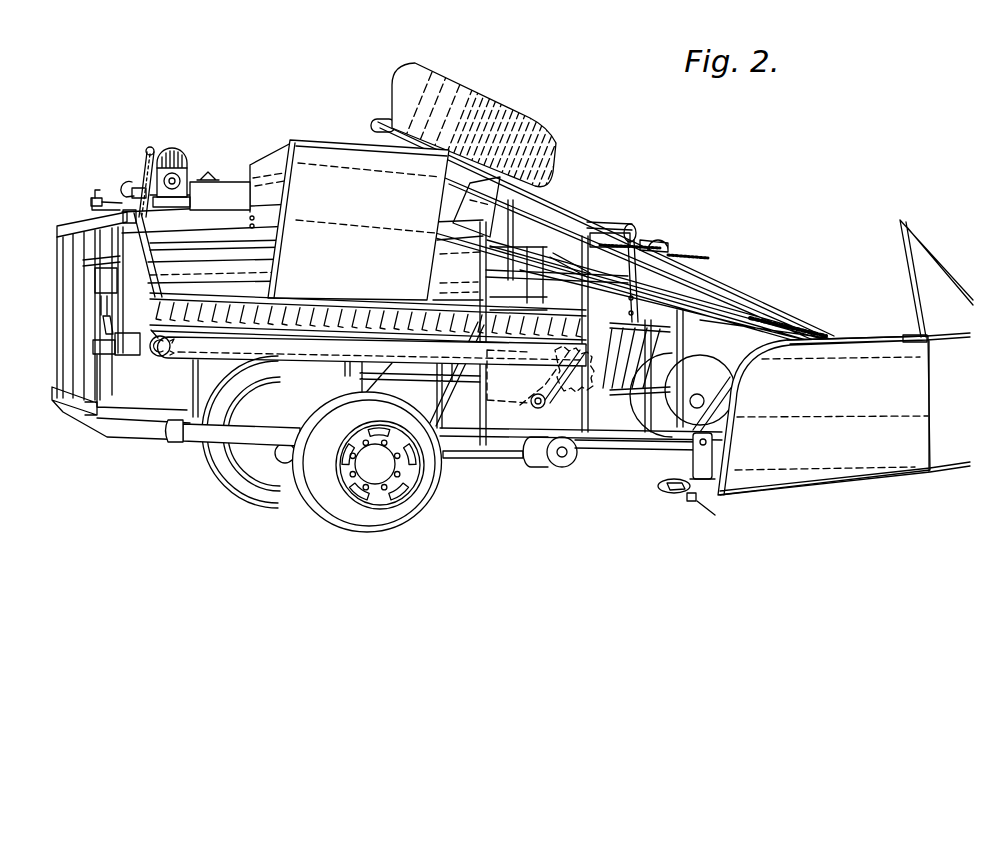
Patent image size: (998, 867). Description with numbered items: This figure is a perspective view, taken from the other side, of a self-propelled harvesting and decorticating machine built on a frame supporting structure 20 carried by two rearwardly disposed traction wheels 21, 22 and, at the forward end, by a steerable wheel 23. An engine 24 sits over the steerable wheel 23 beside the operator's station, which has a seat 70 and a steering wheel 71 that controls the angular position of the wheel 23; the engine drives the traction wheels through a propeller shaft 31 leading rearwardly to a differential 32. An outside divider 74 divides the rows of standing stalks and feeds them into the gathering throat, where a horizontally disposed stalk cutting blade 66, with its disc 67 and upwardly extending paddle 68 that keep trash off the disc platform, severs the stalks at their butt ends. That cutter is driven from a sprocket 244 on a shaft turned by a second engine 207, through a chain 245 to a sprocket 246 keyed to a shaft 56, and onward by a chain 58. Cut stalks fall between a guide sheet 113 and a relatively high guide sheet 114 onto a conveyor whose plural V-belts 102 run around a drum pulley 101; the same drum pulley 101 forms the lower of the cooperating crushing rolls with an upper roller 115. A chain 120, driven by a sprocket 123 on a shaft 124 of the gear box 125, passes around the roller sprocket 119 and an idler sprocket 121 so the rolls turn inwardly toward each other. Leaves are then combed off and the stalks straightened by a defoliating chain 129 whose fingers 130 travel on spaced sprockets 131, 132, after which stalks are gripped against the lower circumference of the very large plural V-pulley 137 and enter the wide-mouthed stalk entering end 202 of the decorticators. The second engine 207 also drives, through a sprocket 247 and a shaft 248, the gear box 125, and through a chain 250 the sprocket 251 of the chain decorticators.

The frame supporting structure 20 is at (191, 443).
The traction wheel 21 is at (235, 480).
The traction wheel 22 is at (380, 530).
The steerable wheel 23 is at (735, 390).
The engine 24 is at (668, 236).
The propeller shaft 31 is at (465, 459).
The differential 32 is at (284, 458).
The shaft 56 is at (546, 408).
The chain 58 is at (546, 417).
The stalk cutting blade 66 is at (700, 501).
The disc 67 is at (688, 495).
The paddle 68 is at (667, 484).
The seat 70 is at (563, 292).
The steering wheel 71 is at (617, 222).
The outside divider 74 is at (908, 474).
The drum pulley 101 is at (337, 300).
The V-belts 102 is at (265, 295).
The guide sheet 113 is at (527, 124).
The guide sheet 114 is at (327, 150).
The roller 115 is at (280, 258).
The sprocket 119 is at (148, 263).
The chain 120 is at (91, 199).
The idler sprocket 121 is at (138, 357).
The sprocket 123 is at (151, 150).
The shaft 124 is at (147, 163).
The gear box 125 is at (184, 147).
The defoliating chain 129 is at (165, 365).
The fingers 130 is at (199, 368).
The sprocket 131 is at (520, 372).
The sprocket 132 is at (154, 358).
The plural V-pulley 137 is at (553, 207).
The stalk entering end 202 is at (399, 295).
The second engine 207 is at (239, 175).
The sprocket 244 is at (545, 390).
The chain 245 is at (548, 402).
The sprocket 246 is at (526, 396).
The sprocket 247 is at (123, 185).
The shaft 248 is at (138, 188).
The chain 250 is at (101, 306).
The sprocket 251 is at (103, 326).